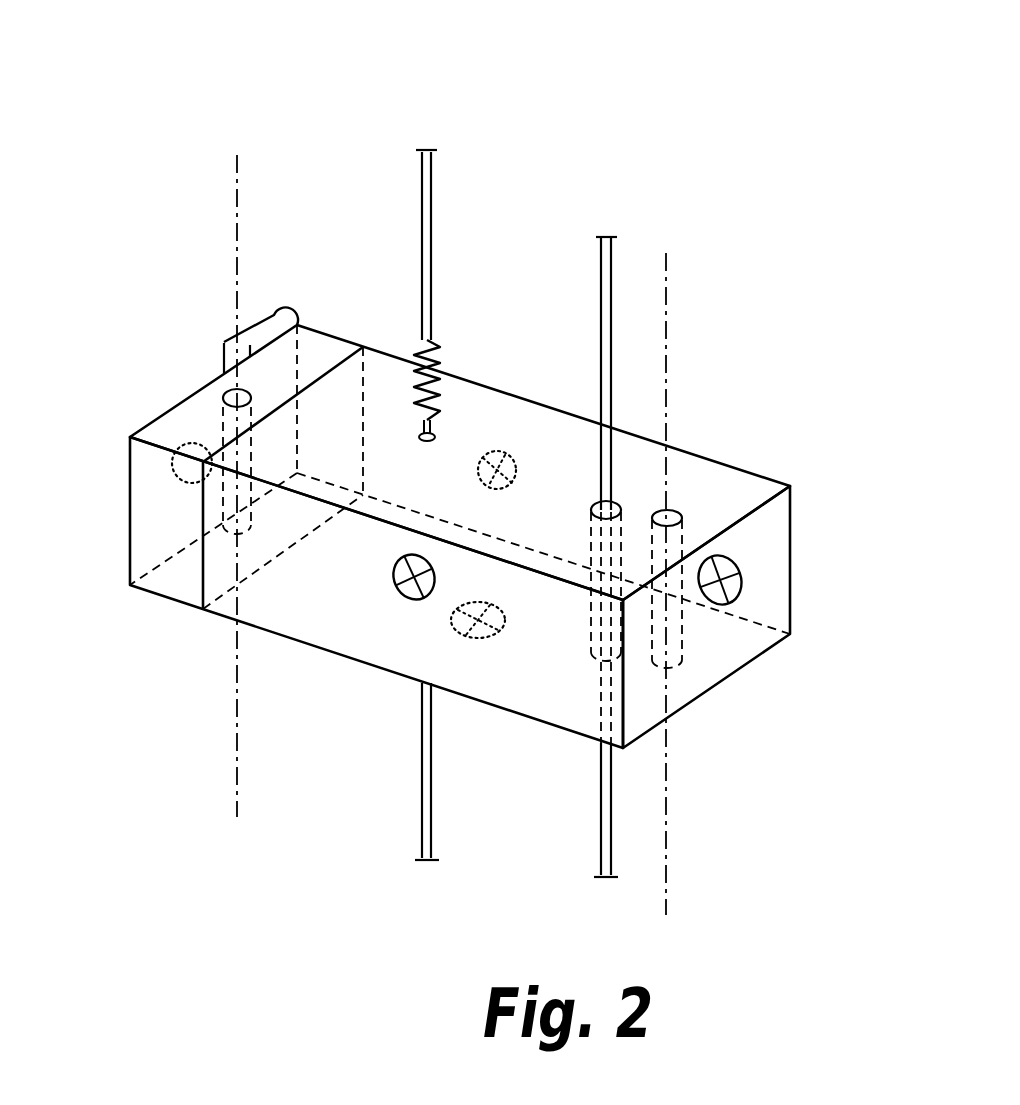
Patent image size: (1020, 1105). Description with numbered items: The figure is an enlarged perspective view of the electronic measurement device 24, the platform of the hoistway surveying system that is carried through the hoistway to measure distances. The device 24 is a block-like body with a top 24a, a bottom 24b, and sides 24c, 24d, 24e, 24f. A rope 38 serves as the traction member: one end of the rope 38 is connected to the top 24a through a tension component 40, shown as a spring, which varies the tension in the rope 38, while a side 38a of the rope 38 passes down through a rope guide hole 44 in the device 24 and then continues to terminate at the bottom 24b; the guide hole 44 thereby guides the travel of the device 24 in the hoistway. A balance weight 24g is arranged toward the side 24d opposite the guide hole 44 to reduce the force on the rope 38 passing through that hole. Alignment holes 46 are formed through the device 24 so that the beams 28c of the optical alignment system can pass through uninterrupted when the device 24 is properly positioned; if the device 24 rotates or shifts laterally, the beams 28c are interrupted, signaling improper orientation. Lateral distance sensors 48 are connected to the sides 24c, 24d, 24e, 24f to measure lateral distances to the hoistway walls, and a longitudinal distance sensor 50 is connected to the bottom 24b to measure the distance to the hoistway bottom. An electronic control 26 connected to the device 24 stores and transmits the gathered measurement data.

The electronic measurement device 24 is at (660, 124).
The top 24a is at (397, 378).
The bottom 24b is at (393, 618).
The side 24c is at (740, 612).
The side 24d is at (175, 406).
The side 24e is at (272, 603).
The side 24f is at (500, 423).
The balance weight 24g is at (323, 352).
The electronic control 26 is at (224, 342).
The beams 28c is at (666, 253).
The rope 38 is at (444, 242).
The side of the rope 38a is at (600, 828).
The tension component 40 is at (441, 347).
The rope guide hole 44 is at (617, 503).
The alignment holes 46 is at (678, 511).
The lateral distance sensors 48 is at (175, 480).
The longitudinal distance sensor 50 is at (497, 637).